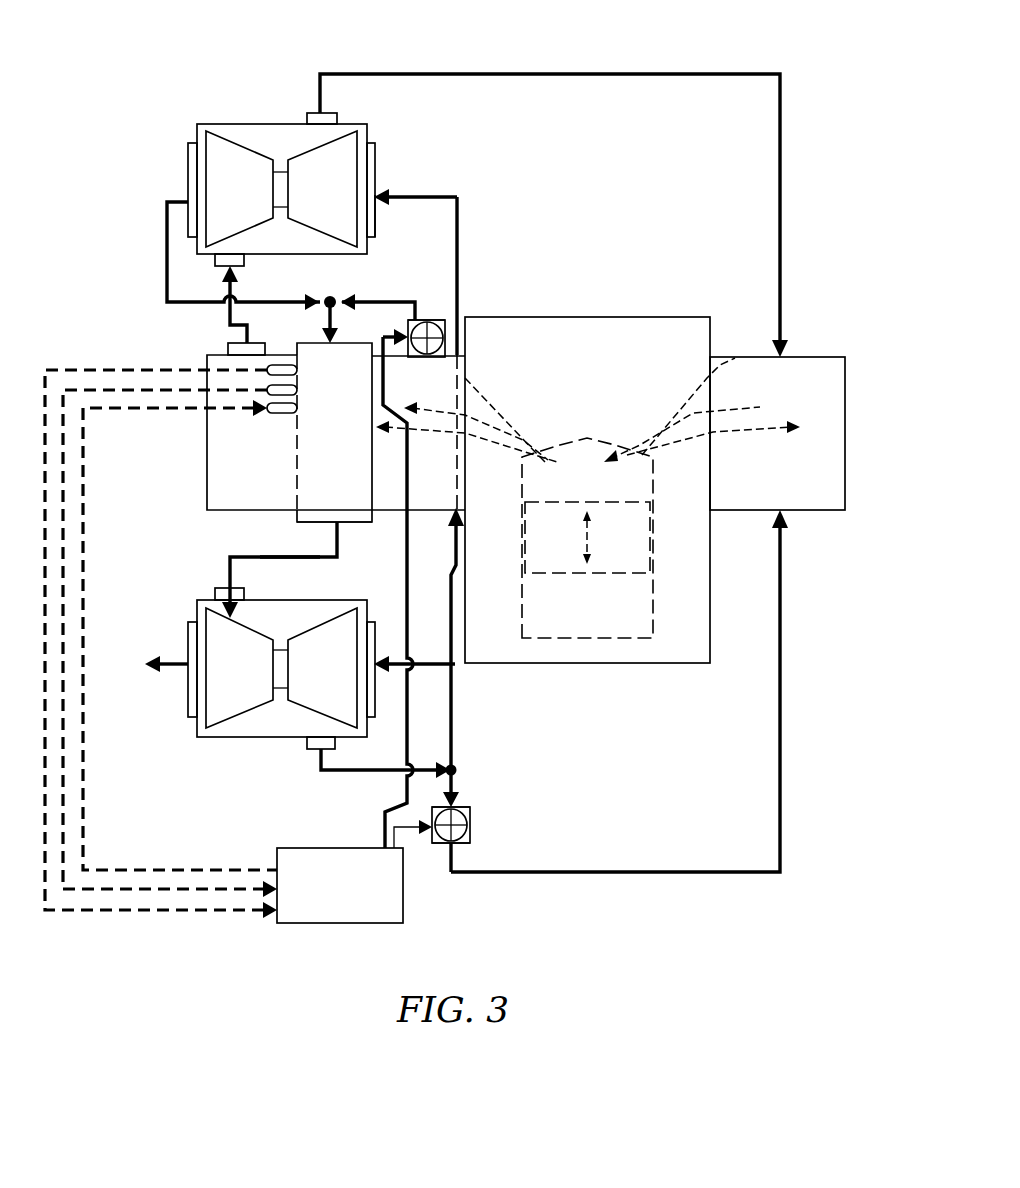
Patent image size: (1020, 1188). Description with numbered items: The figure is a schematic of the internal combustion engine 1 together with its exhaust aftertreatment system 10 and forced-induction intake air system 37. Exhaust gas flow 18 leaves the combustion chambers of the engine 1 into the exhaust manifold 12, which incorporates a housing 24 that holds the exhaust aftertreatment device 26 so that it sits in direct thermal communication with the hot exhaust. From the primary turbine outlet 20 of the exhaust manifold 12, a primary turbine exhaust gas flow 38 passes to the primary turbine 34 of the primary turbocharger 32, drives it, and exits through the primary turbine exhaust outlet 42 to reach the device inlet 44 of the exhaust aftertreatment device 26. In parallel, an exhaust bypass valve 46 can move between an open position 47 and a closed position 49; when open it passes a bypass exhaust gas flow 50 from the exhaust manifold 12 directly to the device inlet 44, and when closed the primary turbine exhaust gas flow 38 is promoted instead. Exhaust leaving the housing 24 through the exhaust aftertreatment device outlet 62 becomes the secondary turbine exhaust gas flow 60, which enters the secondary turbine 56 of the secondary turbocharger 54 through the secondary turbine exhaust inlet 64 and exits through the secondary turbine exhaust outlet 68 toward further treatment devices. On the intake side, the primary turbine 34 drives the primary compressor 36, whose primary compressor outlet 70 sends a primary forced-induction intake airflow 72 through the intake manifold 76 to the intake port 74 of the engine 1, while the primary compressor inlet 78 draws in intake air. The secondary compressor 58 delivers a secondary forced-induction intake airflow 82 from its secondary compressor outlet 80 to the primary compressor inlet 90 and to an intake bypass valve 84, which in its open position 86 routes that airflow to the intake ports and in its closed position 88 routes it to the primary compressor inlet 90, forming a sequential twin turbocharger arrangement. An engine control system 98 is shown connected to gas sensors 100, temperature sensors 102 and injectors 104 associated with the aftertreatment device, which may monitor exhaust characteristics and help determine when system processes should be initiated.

The internal combustion engine 1 is at (610, 310).
The exhaust aftertreatment system 10 is at (255, 609).
The exhaust manifold 12 is at (198, 470).
The exhaust gas flow 18 is at (531, 455).
The primary turbine outlet 20 is at (244, 338).
The housing 24 is at (348, 524).
The exhaust aftertreatment device 26 is at (373, 482).
The primary turbocharger 32 is at (297, 163).
The primary turbine 34 is at (230, 176).
The primary compressor 36 is at (338, 180).
The forced-induction intake air system 37 is at (848, 382).
The primary turbine exhaust gas flow 38 is at (165, 290).
The primary turbine exhaust outlet 42 is at (188, 183).
The device inlet 44 is at (314, 342).
The exhaust bypass valve 46 is at (445, 332).
The open position 47 is at (421, 352).
The closed position 49 is at (436, 320).
The bypass exhaust gas flow 50 is at (385, 300).
The secondary turbocharger 54 is at (258, 675).
The secondary turbine 56 is at (226, 641).
The secondary compressor 58 is at (338, 640).
The secondary turbine exhaust gas flow 60 is at (250, 556).
The exhaust aftertreatment device outlet 62 is at (317, 524).
The secondary turbine exhaust inlet 64 is at (223, 588).
The secondary turbine exhaust outlet 68 is at (188, 692).
The primary compressor outlet 70 is at (335, 112).
The primary forced-induction intake airflow 72 is at (562, 72).
The intake port 74 is at (721, 390).
The intake manifold 76 is at (803, 355).
The primary compressor inlet 78 is at (377, 167).
The secondary compressor outlet 80 is at (312, 750).
The secondary forced-induction intake airflow 82 is at (457, 218).
The intake bypass valve 84 is at (470, 820).
The open position 86 is at (463, 806).
The closed position 88 is at (458, 842).
The primary compressor inlet 90 is at (377, 218).
The engine control system 98 is at (340, 885).
The gas sensor 100 is at (285, 371).
The temperature sensor 102 is at (285, 391).
The injector 104 is at (285, 411).